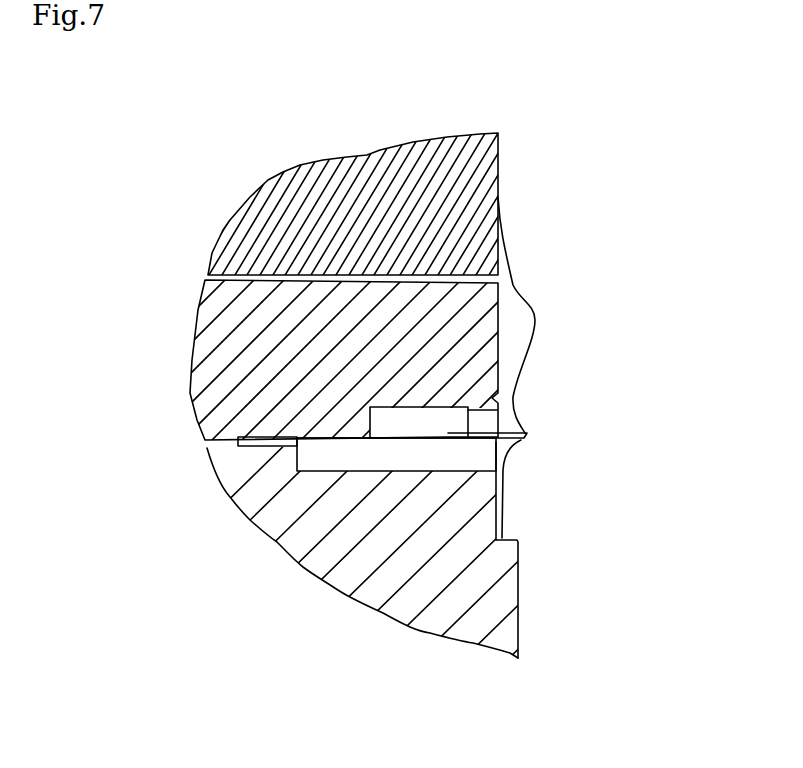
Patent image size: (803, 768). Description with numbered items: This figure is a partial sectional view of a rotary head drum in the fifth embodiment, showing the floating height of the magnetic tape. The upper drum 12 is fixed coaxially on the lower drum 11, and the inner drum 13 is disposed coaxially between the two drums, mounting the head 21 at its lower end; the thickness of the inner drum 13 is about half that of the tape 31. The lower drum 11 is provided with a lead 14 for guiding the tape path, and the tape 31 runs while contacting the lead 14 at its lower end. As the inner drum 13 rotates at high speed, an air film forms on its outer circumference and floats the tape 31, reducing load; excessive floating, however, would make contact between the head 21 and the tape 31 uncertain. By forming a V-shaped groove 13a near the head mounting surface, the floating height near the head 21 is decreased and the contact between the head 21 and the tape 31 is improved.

The lower drum 11 is at (402, 608).
The upper drum 12 is at (298, 180).
The inner drum 13 is at (500, 348).
The V-shaped groove 13a is at (500, 396).
The lead 14 is at (510, 540).
The head 21 is at (528, 436).
The tape 31 is at (530, 302).